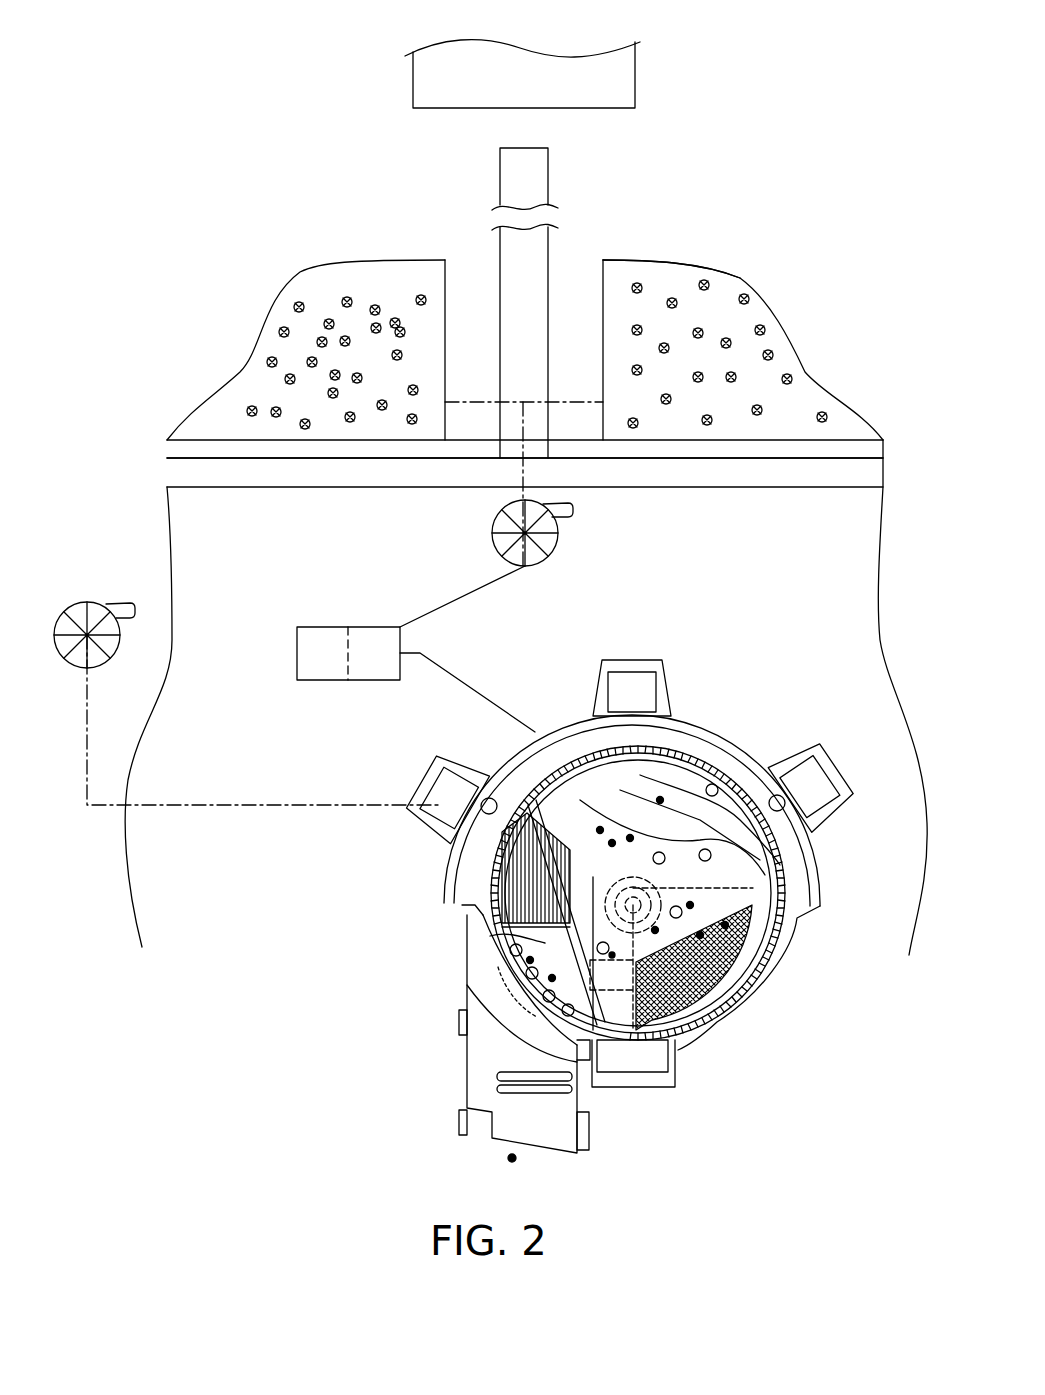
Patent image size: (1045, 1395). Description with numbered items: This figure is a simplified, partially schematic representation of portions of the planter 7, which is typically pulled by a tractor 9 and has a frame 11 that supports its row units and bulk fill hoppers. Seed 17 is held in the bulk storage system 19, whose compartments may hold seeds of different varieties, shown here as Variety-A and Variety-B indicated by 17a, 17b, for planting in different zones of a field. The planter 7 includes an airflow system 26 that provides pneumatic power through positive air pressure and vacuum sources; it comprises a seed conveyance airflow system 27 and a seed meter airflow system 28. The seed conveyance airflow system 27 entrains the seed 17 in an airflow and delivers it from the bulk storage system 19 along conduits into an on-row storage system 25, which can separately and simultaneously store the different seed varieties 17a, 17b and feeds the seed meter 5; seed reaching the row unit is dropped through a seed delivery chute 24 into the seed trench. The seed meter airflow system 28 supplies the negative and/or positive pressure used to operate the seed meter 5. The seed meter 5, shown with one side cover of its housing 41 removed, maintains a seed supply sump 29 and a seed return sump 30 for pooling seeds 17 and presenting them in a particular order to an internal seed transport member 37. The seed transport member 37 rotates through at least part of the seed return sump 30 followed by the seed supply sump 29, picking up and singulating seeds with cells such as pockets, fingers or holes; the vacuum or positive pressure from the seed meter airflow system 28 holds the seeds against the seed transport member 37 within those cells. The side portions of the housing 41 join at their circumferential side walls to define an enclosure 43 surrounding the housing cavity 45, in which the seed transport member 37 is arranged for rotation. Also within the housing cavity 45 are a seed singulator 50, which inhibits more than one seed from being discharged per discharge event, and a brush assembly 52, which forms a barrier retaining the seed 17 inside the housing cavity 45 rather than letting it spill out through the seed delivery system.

The seed meter 5 is at (626, 898).
The planter 7 is at (888, 398).
The tractor 9 is at (657, 71).
The frame 11 is at (874, 477).
The seed 17 is at (355, 282).
The seed variety (Variety-A) 17a is at (284, 331).
The seed variety (Variety-B) 17b is at (770, 356).
The bulk storage system 19 is at (760, 252).
The seed delivery chute 24 is at (496, 1062).
The on-row storage system 25 is at (325, 607).
The airflow system 26 is at (485, 558).
The seed conveyance airflow system 27 is at (486, 506).
The seed meter airflow system 28 is at (87, 738).
The seed supply sump 29 is at (700, 1020).
The seed return sump 30 is at (593, 1030).
The seed transport member 37 is at (483, 939).
The housing 41 is at (571, 737).
The enclosure 43 is at (729, 707).
The housing cavity 45 is at (593, 822).
The seed singulator 50 is at (698, 815).
The brush assembly 52 is at (470, 850).